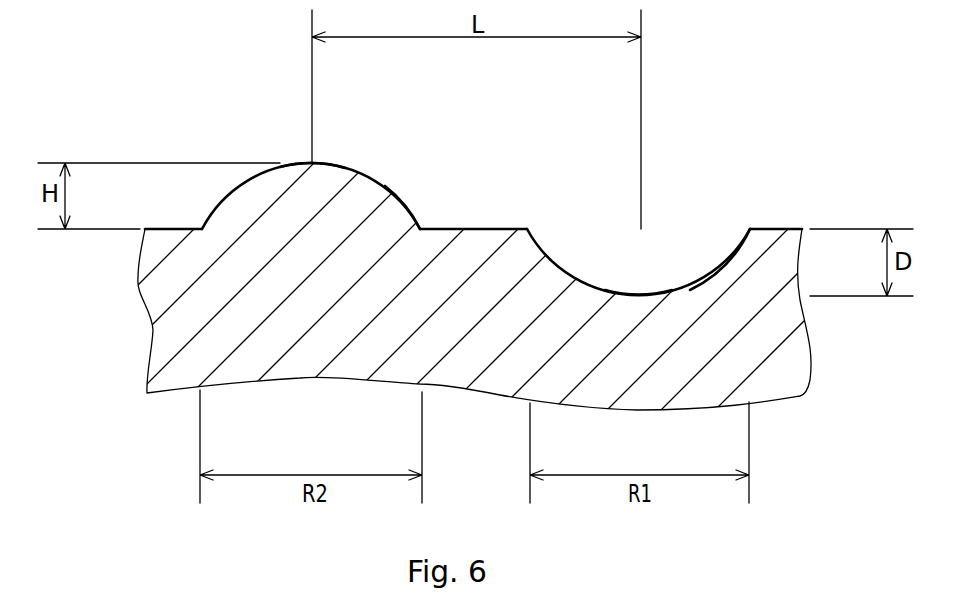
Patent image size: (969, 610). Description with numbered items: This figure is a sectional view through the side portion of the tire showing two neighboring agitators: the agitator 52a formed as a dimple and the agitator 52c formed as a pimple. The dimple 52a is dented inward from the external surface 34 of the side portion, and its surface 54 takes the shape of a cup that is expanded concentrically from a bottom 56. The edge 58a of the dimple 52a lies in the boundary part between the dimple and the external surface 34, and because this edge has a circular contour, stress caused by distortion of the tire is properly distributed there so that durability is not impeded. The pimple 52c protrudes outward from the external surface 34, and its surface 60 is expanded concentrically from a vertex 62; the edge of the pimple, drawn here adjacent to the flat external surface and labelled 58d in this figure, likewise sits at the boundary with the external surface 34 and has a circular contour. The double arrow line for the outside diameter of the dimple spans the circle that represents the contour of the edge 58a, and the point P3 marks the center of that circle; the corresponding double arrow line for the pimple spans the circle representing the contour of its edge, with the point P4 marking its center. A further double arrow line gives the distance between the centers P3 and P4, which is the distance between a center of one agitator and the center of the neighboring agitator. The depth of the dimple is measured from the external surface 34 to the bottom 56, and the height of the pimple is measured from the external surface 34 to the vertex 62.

The external surface 34 is at (767, 229).
The agitator to be the dimple 52a is at (733, 255).
The agitator to be the pimple 52c is at (292, 163).
The surface of the dimple 54 is at (548, 255).
The bottom of the dimple 56 is at (642, 297).
The edge of the dimple 58a is at (528, 230).
The flat portion 58d is at (202, 228).
The surface of the pimple 60 is at (398, 196).
The vertex of the pimple 62 is at (313, 163).
The center of the circle of the dimple edge P3 is at (643, 228).
The center of the circle of the pimple edge P4 is at (310, 230).